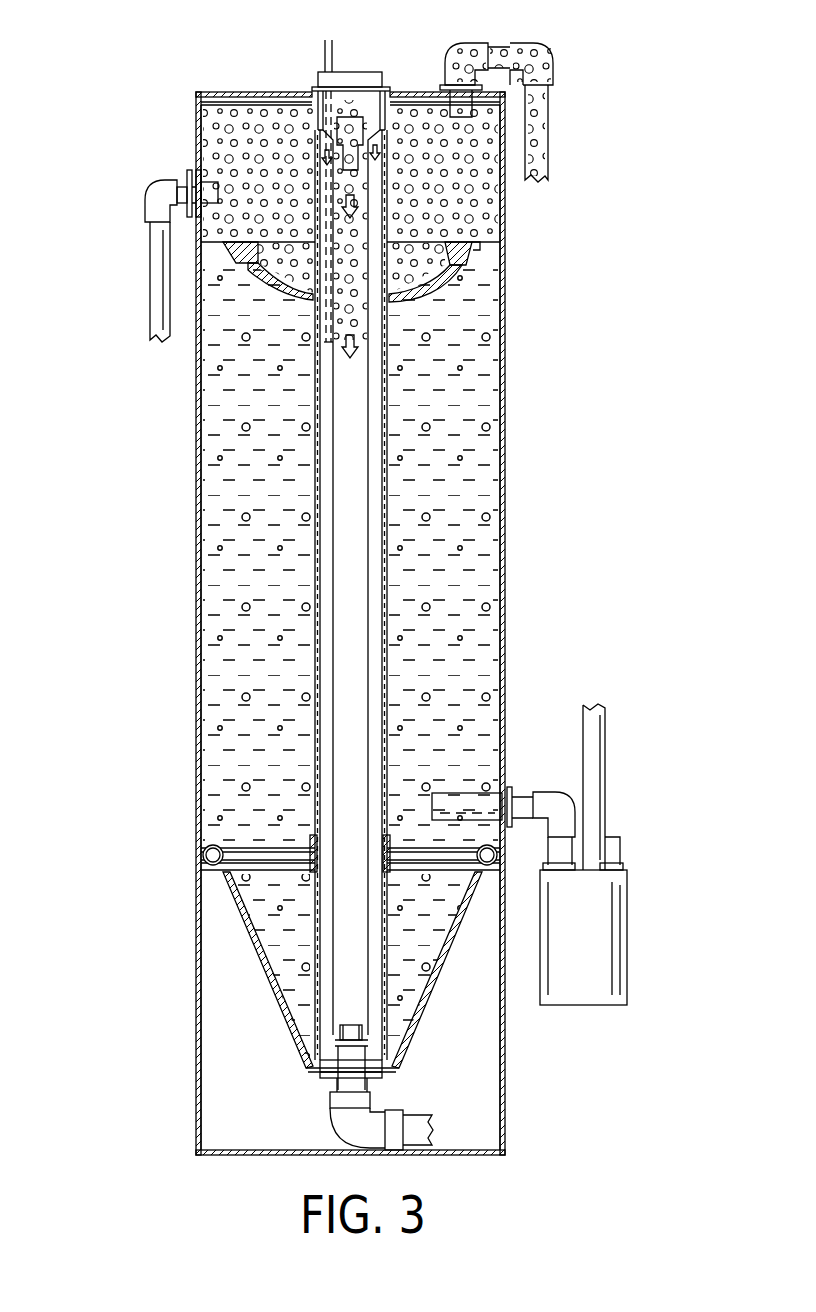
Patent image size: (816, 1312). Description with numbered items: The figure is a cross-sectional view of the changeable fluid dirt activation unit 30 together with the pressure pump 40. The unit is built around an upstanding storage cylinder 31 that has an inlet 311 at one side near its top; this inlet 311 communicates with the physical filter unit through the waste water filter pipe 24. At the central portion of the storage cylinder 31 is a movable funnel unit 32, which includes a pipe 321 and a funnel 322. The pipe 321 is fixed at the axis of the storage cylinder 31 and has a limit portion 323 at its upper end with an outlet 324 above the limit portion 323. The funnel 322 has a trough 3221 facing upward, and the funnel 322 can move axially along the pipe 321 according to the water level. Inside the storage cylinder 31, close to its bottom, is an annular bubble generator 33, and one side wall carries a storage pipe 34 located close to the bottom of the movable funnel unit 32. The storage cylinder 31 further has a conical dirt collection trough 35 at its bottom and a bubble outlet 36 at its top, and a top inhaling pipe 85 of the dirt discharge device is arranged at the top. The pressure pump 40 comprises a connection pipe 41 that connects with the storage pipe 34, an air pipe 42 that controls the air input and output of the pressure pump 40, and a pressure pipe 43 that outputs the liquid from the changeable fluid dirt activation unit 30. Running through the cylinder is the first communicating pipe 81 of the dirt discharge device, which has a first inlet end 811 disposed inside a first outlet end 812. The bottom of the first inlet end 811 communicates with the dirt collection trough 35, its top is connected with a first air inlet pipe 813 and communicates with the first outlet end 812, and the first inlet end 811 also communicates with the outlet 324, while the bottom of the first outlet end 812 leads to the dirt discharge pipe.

The changeable fluid dirt activation unit 30 is at (210, 83).
The storage cylinder 31 is at (198, 130).
The pipe 321 is at (313, 177).
The inlet 311 is at (177, 195).
The movable funnel unit 32 is at (335, 248).
The waste water filter pipe 24 is at (158, 308).
The outlet 324 is at (316, 160).
The first air inlet pipe 813 is at (333, 64).
The bubble outlet 36 is at (442, 85).
The top inhaling pipe 85 is at (548, 130).
The limit portion 323 is at (390, 175).
The funnel 322 is at (470, 252).
The trough 3221 is at (413, 270).
The first inlet end 811 is at (372, 388).
The first communicating pipe 81 is at (372, 445).
The storage pipe 34 is at (478, 797).
The connection pipe 41 is at (555, 853).
The pressure pipe 43 is at (598, 760).
The air pipe 42 is at (612, 840).
The pressure pump 40 is at (635, 925).
The annular bubble generator 33 is at (205, 848).
The conical dirt collection trough 35 is at (258, 945).
The first outlet end 812 is at (353, 993).